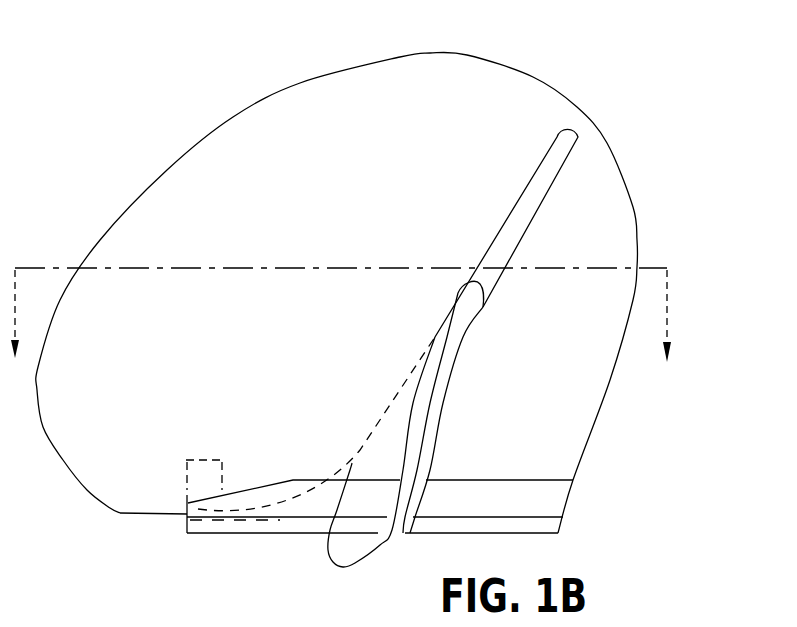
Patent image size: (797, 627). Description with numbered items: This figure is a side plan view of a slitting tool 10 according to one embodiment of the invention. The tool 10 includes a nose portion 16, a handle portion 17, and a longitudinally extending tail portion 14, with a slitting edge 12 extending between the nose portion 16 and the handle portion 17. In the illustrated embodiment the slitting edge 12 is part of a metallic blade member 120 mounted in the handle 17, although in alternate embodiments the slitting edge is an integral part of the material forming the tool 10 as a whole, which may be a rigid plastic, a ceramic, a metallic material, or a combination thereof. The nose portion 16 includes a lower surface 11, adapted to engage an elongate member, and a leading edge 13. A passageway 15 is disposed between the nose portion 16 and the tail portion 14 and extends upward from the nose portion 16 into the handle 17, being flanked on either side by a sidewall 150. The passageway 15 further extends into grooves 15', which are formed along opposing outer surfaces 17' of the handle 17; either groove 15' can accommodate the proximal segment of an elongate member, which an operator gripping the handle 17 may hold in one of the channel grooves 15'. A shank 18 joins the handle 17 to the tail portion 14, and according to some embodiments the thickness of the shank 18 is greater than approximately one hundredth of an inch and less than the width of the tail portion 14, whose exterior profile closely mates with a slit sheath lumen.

The slitting tool 10 is at (234, 60).
The handle portion 17 is at (337, 292).
The outer surfaces of handle 17' is at (327, 201).
The grooves 15' is at (506, 233).
The passageway 15 is at (402, 444).
The sidewall 150 is at (386, 505).
The shank 18 is at (552, 503).
The nose portion 16 is at (222, 524).
The tail portion 14 is at (547, 525).
The lower surface 11 is at (205, 520).
The slitting edge 12 is at (187, 515).
The leading edge 13 is at (187, 527).
The metallic blade member 120 is at (219, 491).